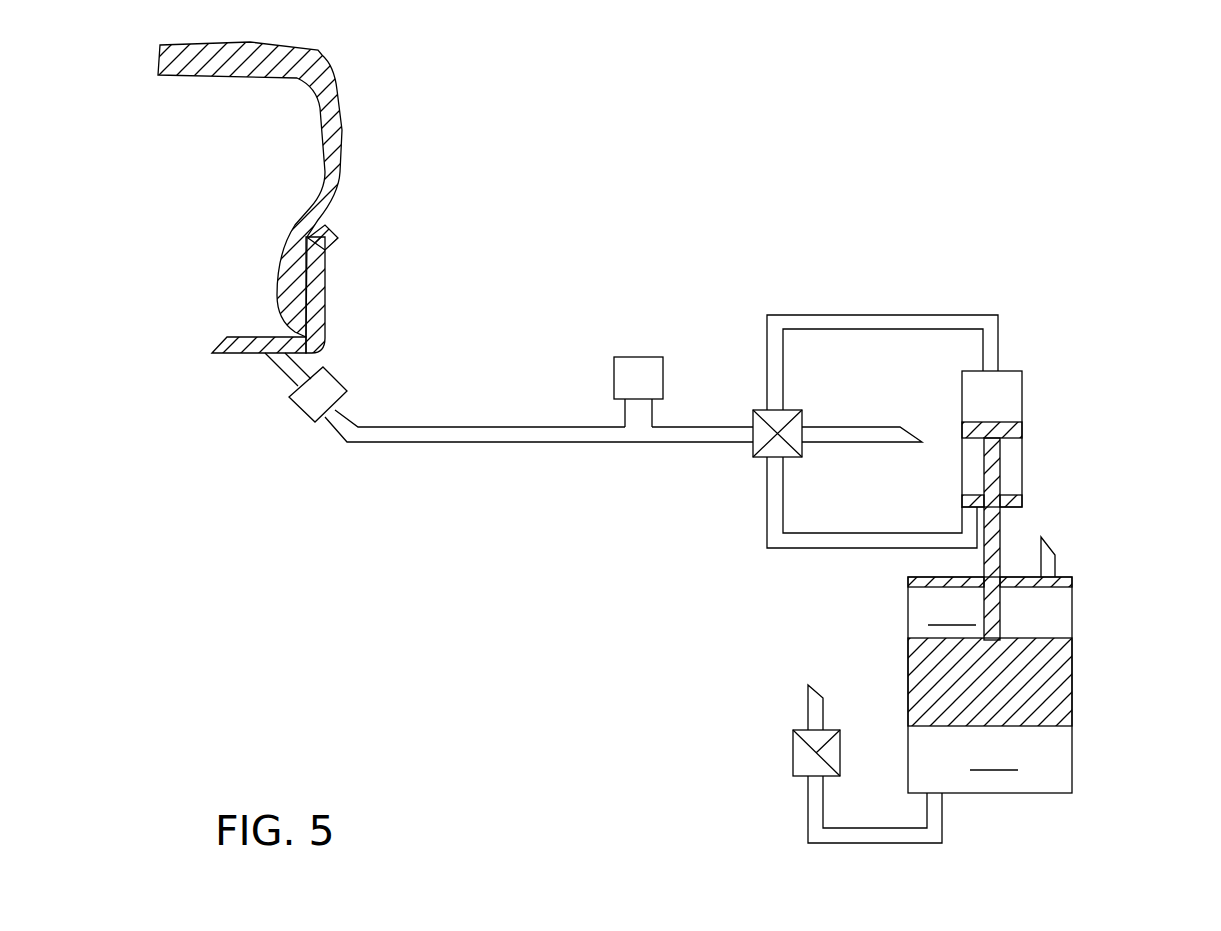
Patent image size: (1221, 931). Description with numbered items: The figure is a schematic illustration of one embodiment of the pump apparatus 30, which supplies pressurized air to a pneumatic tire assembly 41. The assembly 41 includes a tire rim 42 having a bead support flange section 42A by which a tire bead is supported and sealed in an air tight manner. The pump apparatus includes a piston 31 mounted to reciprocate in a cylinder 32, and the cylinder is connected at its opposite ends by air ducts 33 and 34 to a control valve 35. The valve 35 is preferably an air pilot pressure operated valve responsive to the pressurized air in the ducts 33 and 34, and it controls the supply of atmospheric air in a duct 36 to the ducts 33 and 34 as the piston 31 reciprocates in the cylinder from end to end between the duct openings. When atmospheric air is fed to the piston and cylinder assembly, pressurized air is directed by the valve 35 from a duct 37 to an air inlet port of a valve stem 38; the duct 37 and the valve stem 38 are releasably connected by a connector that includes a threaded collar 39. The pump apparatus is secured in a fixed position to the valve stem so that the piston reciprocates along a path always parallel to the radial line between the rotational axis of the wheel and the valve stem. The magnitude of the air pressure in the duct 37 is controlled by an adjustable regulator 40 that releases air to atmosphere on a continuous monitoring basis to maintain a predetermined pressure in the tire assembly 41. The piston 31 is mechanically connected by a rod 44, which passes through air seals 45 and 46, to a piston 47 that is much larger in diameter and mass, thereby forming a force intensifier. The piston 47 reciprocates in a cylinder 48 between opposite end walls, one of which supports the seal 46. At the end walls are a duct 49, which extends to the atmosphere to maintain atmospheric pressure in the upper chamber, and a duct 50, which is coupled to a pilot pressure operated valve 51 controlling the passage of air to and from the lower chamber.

The pump apparatus 30 is at (872, 307).
The piston 31 is at (1025, 432).
The cylinder 32 is at (1025, 400).
The air duct 33 is at (957, 315).
The air duct 34 is at (848, 548).
The control valve 35 is at (753, 450).
The duct 36 is at (855, 426).
The duct 37 is at (460, 443).
The valve stem 38 is at (287, 378).
The threaded collar 39 is at (343, 385).
The regulator 40 is at (622, 357).
The pneumatic tire assembly 41 is at (336, 100).
The tire rim 42 is at (243, 355).
The bead support flange section 42A is at (330, 300).
The rod 44 is at (1000, 562).
The air seal 45 is at (1025, 500).
The air seal 46 is at (1045, 590).
The piston 47 is at (910, 665).
The cylinder 48 is at (1073, 765).
The duct 49 is at (1057, 560).
The duct 50 is at (943, 815).
The valve 51 is at (793, 747).